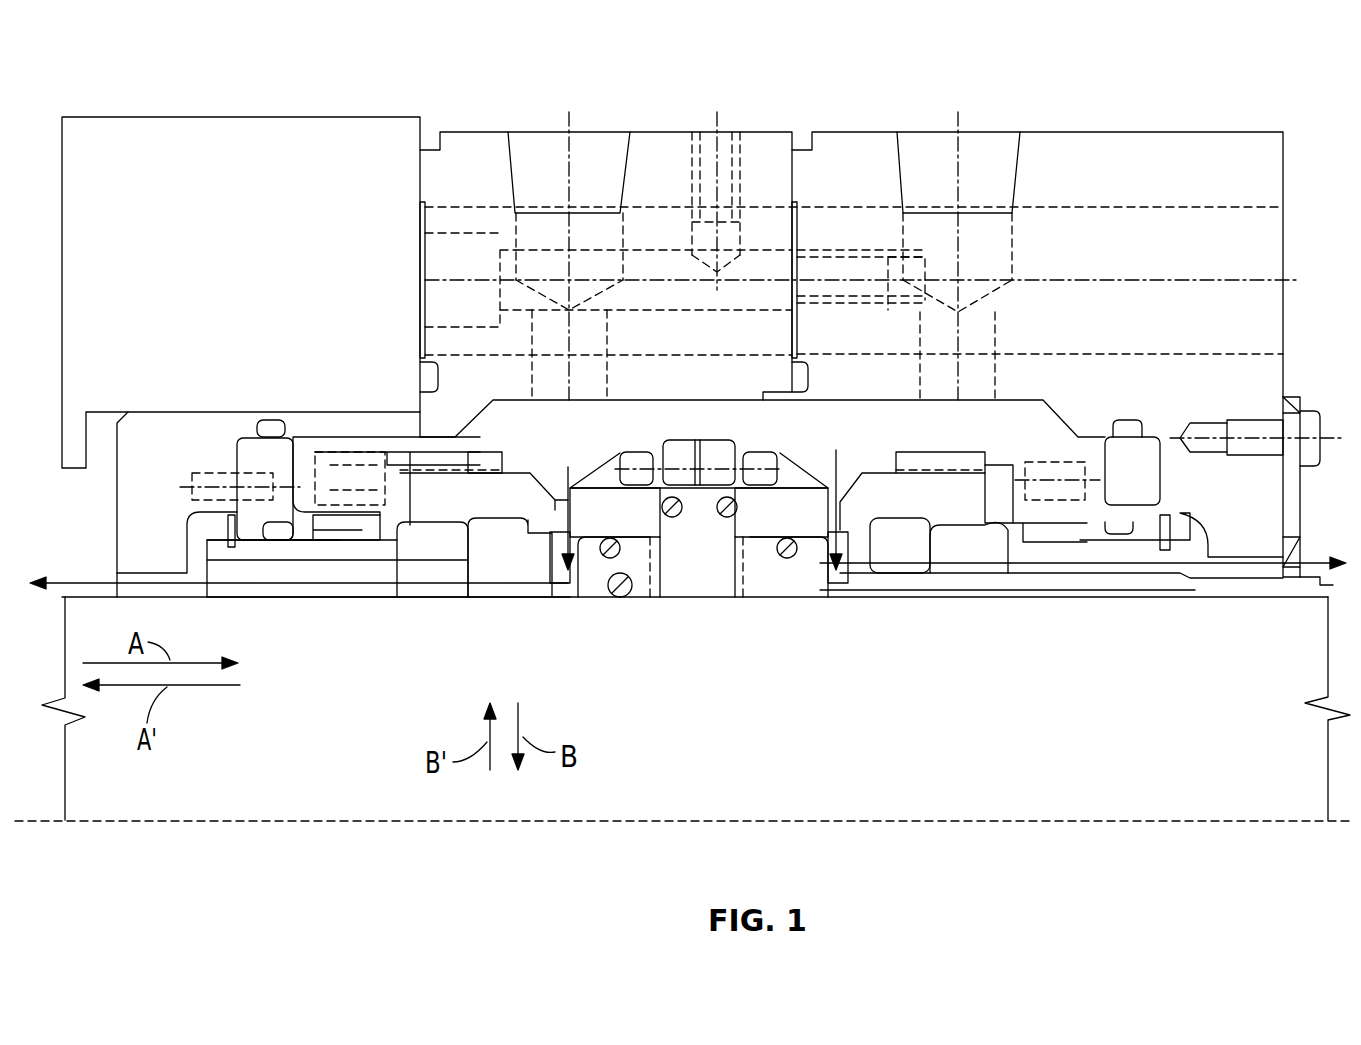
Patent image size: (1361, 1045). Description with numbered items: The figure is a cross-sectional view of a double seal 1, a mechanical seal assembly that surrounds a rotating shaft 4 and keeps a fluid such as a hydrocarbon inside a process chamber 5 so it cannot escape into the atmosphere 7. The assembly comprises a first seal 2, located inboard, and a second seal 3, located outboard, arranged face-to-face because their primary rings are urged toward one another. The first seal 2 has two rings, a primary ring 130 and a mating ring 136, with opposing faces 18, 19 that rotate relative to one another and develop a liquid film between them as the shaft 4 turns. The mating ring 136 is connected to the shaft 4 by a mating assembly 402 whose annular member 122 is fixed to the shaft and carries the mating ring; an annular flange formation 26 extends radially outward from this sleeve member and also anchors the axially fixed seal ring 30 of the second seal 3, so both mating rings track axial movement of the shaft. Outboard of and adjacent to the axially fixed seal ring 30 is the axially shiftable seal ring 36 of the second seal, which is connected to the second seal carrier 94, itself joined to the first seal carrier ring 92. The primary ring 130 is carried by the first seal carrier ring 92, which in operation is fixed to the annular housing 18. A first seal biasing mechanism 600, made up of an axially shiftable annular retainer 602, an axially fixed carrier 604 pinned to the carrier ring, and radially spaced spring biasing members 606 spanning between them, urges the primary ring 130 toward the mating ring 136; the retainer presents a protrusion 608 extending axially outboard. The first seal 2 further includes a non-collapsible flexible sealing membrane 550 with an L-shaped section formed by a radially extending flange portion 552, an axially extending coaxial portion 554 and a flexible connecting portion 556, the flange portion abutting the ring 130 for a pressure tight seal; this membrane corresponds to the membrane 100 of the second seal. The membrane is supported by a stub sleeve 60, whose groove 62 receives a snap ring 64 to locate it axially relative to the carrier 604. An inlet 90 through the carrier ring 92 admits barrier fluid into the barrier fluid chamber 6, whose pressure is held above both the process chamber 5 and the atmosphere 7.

The double seal 1 is at (1286, 71).
The first seal 2 is at (388, 611).
The second seal 3 is at (987, 622).
The rotating shaft 4 is at (699, 567).
The process chamber 5 is at (30, 555).
The barrier fluid chamber 6 is at (603, 422).
The atmosphere 7 is at (107, 411).
The annular housing / face 18 is at (241, 281).
The face 19 is at (593, 498).
The annular flange formation 26 is at (713, 580).
The axially fixed seal ring 30 is at (798, 533).
The axially shiftable seal ring 36 is at (878, 480).
The stub sleeve 60 is at (343, 555).
The groove 62 is at (240, 555).
The snap ring 64 is at (225, 533).
The inlet 90 is at (593, 138).
The first seal carrier ring 92 is at (665, 138).
The second seal carrier 94 is at (838, 143).
The non-collapsible flexible sealing membrane 100 is at (1068, 540).
The annular member 122 is at (592, 590).
The primary ring 130 is at (560, 503).
The mating ring 136 is at (644, 533).
The mating assembly 402 is at (728, 622).
The non-collapsible flexible sealing membrane 550 is at (417, 590).
The flange portion 552 is at (400, 490).
The coaxial portion 554 is at (377, 545).
The flexible connecting portion 556 is at (470, 560).
The first seal biasing mechanism 600 is at (314, 435).
The axially shiftable annular retainer 602 is at (365, 455).
The axially fixed carrier 604 is at (237, 458).
The biasing members 606 is at (313, 465).
The protrusion 608 is at (383, 472).